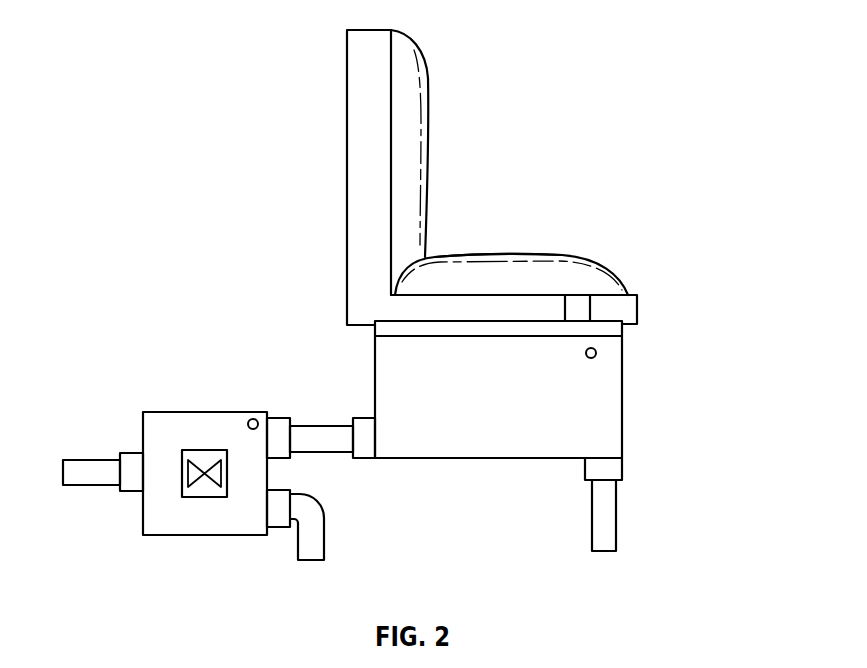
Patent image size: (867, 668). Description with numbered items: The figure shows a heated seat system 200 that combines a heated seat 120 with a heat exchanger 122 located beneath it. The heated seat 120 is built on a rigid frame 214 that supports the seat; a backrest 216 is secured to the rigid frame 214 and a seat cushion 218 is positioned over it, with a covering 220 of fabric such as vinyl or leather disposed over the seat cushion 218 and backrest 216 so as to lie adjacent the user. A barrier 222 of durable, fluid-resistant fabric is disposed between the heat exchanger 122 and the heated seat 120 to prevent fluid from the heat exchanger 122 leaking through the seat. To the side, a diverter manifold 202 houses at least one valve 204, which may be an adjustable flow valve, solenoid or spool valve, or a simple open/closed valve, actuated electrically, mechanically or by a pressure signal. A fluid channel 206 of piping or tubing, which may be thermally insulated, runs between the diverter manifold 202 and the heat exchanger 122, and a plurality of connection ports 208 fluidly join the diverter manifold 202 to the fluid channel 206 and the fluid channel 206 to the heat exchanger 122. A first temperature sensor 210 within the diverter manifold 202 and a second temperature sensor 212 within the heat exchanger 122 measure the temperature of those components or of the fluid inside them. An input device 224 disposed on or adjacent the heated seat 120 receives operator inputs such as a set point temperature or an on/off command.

The heated seat system 200 is at (628, 58).
The heated seat 120 is at (474, 167).
The heat exchanger 122 is at (378, 352).
The diverter manifold 202 is at (168, 411).
The valve 204 is at (217, 448).
The fluid channel 206 is at (93, 460).
The connection ports 208 is at (132, 493).
The first temperature sensor 210 is at (252, 419).
The second temperature sensor 212 is at (597, 356).
The rigid frame 214 is at (347, 213).
The backrest 216 is at (412, 78).
The seat cushion 218 is at (585, 275).
The covering 220 is at (515, 250).
The barrier 222 is at (622, 332).
The input device 224 is at (584, 308).